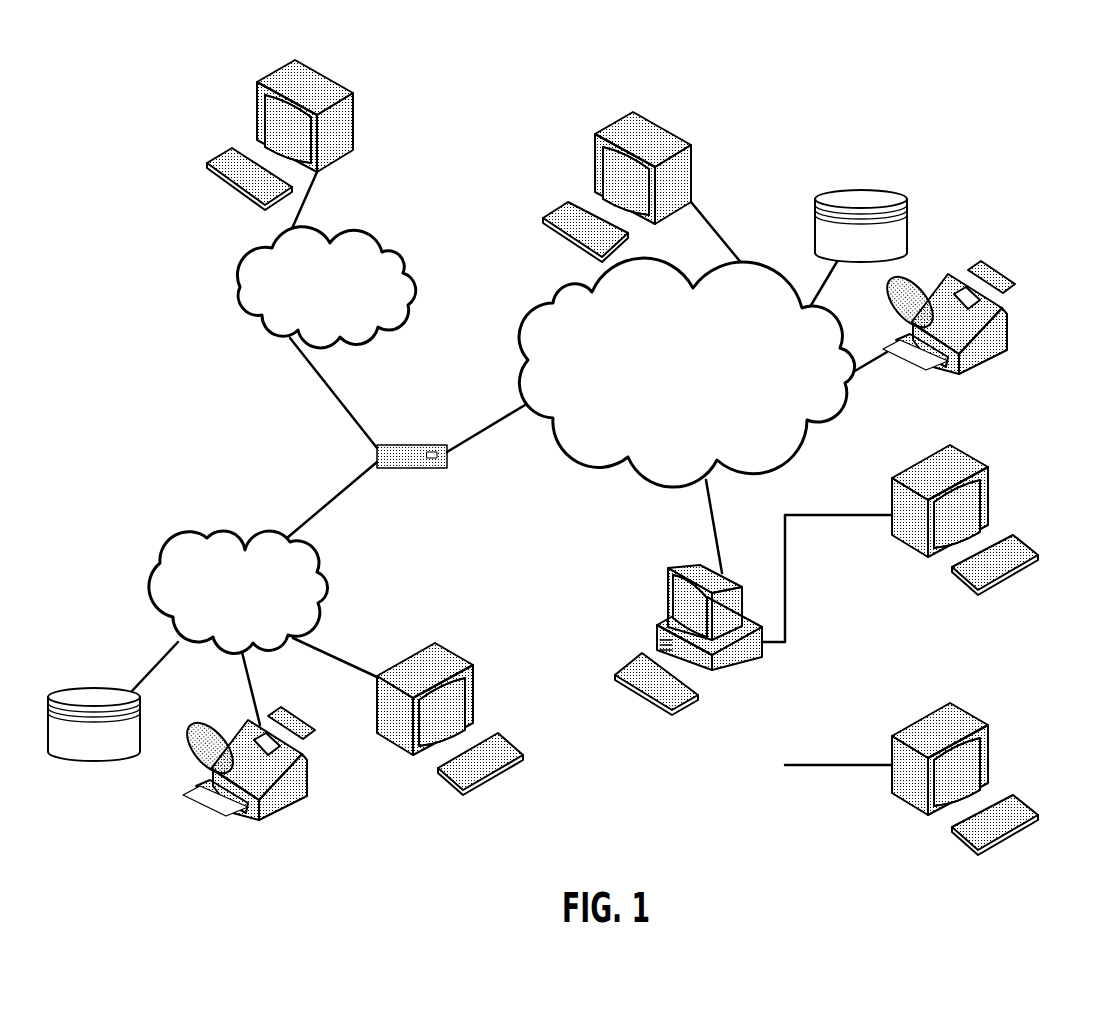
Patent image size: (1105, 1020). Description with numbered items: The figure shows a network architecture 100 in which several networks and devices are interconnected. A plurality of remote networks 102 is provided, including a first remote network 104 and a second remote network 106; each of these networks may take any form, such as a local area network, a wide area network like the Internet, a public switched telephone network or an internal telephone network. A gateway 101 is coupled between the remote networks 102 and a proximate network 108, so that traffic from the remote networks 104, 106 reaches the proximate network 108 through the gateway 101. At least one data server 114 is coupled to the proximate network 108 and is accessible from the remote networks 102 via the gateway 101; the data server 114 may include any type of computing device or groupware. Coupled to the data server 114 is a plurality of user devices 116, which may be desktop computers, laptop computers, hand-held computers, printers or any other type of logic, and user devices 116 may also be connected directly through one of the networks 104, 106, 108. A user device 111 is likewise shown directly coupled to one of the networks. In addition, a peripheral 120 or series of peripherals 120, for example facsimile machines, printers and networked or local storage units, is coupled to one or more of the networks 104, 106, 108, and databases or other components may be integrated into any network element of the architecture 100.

The architecture 100 is at (566, 31).
The gateway 101 is at (410, 440).
The remote networks 102 is at (221, 369).
The first remote network 104 is at (157, 567).
The second remote network 106 is at (412, 293).
The proximate network 108 is at (812, 435).
The user device 111 is at (691, 180).
The data server 114 is at (667, 595).
The user devices 116 is at (357, 127).
The peripheral 120 is at (862, 188).